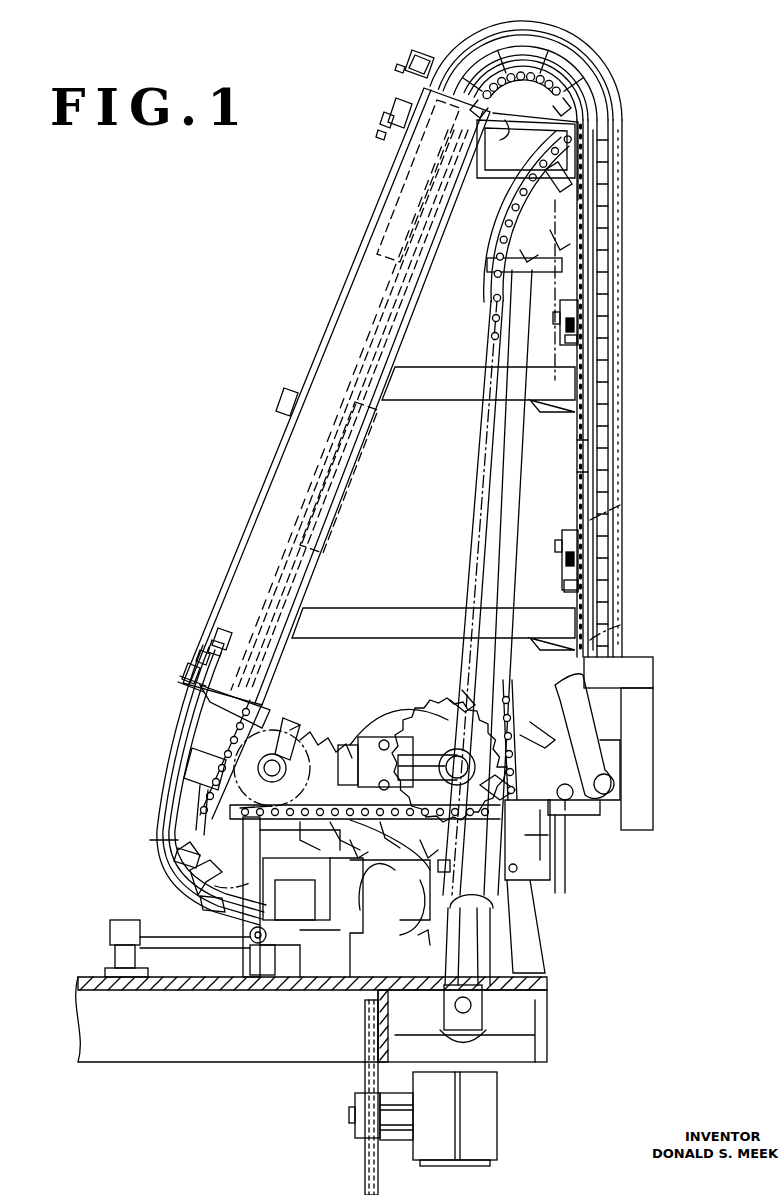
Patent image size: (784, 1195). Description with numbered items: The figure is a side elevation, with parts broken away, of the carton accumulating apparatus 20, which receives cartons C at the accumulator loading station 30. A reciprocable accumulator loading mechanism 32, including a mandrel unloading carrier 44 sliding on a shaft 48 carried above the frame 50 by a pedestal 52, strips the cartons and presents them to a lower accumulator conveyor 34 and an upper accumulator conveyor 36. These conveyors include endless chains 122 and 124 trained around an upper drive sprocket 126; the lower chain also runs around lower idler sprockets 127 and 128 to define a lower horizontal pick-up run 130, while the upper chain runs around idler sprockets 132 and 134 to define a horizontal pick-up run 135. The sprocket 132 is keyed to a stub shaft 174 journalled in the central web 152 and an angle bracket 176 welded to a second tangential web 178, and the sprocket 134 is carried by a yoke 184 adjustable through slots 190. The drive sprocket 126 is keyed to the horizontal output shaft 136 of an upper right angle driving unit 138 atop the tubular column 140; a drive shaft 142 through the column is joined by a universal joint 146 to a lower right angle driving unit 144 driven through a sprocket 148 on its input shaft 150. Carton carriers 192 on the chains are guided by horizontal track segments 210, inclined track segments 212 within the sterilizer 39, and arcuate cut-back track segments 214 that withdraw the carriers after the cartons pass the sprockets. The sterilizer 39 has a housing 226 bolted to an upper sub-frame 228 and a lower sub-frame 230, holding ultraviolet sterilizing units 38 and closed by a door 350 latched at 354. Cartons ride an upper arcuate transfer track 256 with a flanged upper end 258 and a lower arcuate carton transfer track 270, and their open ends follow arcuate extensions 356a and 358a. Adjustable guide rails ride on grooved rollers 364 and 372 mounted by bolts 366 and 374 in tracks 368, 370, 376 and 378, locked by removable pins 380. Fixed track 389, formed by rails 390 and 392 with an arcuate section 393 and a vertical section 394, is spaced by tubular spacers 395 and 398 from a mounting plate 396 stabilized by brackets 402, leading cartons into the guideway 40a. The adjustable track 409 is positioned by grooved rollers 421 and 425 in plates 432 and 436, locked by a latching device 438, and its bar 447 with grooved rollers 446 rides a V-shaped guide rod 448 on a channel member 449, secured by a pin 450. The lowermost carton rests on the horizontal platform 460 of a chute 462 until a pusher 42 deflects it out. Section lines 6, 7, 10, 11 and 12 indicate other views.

The carton accumulating apparatus 20 is at (630, 140).
The fixed track 389 is at (580, 22).
The arcuate section 393 is at (545, 38).
The upper drive sprocket 126 is at (540, 105).
The bracket 402 is at (580, 120).
The guideway 40a is at (602, 240).
The adjustable track 409 is at (620, 212).
The vertical section 394 is at (612, 395).
The tubular spacer 395 is at (590, 418).
The rail 390 is at (595, 438).
The rail 392 is at (580, 455).
The mounting plate 396 is at (575, 442).
The tubular spacer 398 is at (575, 471).
The latching device 438 is at (590, 280).
The upper grooved roller 421 is at (575, 328).
The horizontal plate 432 is at (575, 340).
The lower grooved roller 425 is at (570, 565).
The plate 436 is at (572, 586).
The carton C is at (436, 696).
The section line 7 is at (345, 317).
The sterilizer 39 is at (330, 308).
The ultraviolet sterilizing unit 38 is at (410, 210).
The door 350 is at (335, 340).
The housing 226 is at (298, 540).
The inclined track segment 212 is at (345, 472).
The latch 354 is at (288, 396).
The bar 447 is at (445, 70).
The pin 450 is at (395, 64).
The grooved roller 446 is at (408, 70).
The channel member 449 is at (415, 78).
The V-shaped guide rod 448 is at (420, 88).
The horizontal track 368 is at (398, 100).
The grooved roller 364 is at (392, 113).
The bolt 366 is at (392, 122).
The removable pin 380 is at (392, 130).
The horizontal track 370 is at (394, 135).
The view line 12 is at (407, 29).
The track 376 is at (220, 638).
The grooved roller 372 is at (202, 653).
The bolt 374 is at (196, 658).
The flanged upper end 258 is at (188, 666).
The arcuate extension 358a is at (185, 676).
The track 378 is at (268, 693).
The idler sprocket 132 is at (290, 730).
The upper accumulator conveyor 36 is at (198, 755).
The arcuate extension 356a is at (150, 838).
The upper arcuate transfer track 256 is at (195, 760).
The endless chain 122 is at (180, 853).
The lower accumulator conveyor 34 is at (200, 880).
The lower arcuate carton transfer track 270 is at (215, 920).
The section line 6 is at (165, 838).
The lower idler sprocket 127 is at (272, 764).
The stub shaft 174 is at (295, 767).
The angle bracket 176 is at (332, 756).
The second tangential web 178 is at (440, 728).
The yoke 184 is at (445, 762).
The slot 190 is at (360, 742).
The horizontal track segment 210 is at (335, 798).
The view line 10 is at (288, 795).
The horizontal pick-up run 135 is at (350, 841).
The mandrel unloading carrier 44 is at (240, 916).
The shaft 48 is at (255, 945).
The pedestal 52 is at (270, 975).
The accumulator loading mechanism 32 is at (170, 950).
The frame 50 is at (78, 986).
The central web 152 is at (345, 990).
The lower right angle driving unit 144 is at (480, 1106).
The universal joint 146 is at (462, 996).
The drive shaft 142 is at (465, 950).
The input shaft 150 is at (349, 1113).
The sprocket 148 is at (365, 1130).
The accumulator loading station 30 is at (390, 940).
The lower idler sprocket 128 is at (427, 891).
The lower horizontal pick-up run 130 is at (427, 928).
The tubular column 140 is at (485, 436).
The upper sub-frame 228 is at (478, 389).
The lower sub-frame 230 is at (433, 629).
The section line 11 is at (555, 283).
The upper right angle driving unit 138 is at (486, 225).
The arcuate cut-back track segment 214 is at (468, 262).
The horizontal output shaft 136 is at (526, 149).
The carton carrier 192 is at (560, 178).
The idler sprocket 134 is at (505, 718).
The endless chain 124 is at (513, 727).
The pusher 42 is at (570, 712).
The horizontal platform 460 is at (610, 690).
The chute 462 is at (645, 710).